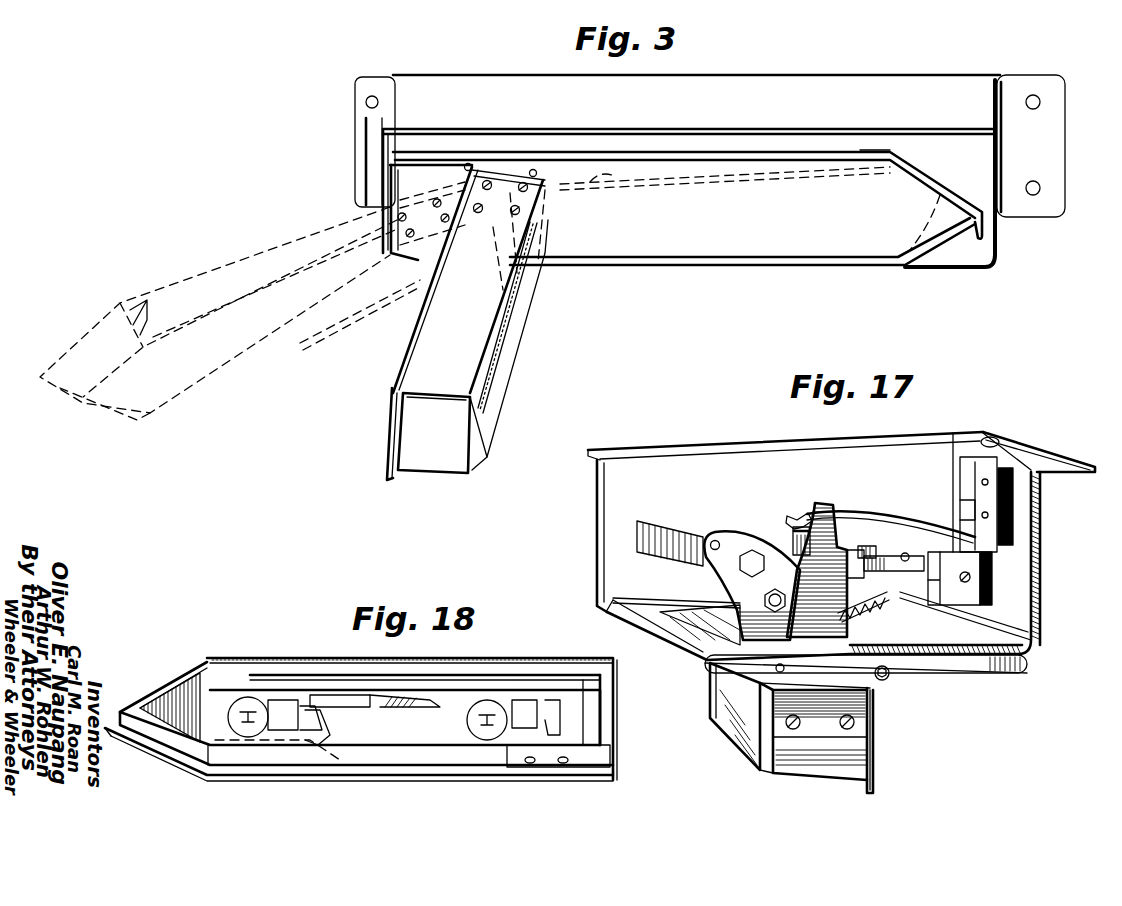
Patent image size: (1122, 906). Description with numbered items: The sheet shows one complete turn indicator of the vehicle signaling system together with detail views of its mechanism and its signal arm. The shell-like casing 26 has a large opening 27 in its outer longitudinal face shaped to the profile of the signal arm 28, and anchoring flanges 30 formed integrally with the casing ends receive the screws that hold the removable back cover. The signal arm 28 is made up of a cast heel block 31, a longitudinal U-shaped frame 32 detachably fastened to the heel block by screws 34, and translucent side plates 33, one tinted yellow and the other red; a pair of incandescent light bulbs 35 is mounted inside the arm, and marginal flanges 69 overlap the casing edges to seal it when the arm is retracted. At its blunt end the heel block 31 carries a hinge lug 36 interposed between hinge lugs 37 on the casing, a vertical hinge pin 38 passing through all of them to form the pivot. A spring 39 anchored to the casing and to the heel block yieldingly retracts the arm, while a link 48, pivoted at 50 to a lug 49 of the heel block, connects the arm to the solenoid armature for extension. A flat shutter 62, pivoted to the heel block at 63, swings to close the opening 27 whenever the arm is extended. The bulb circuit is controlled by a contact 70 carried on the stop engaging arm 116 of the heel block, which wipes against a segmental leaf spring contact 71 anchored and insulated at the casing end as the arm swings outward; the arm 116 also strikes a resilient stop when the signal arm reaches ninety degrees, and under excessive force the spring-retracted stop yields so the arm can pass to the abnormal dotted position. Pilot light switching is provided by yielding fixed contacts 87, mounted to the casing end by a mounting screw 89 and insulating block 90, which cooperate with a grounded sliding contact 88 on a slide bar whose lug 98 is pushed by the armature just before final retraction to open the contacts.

In FIG. 3, the casing 26 is at (848, 63).
In FIG. 17, the casing 26 is at (597, 527).
In FIG. 3, the opening 27 is at (913, 247).
In FIG. 17, the opening 27 is at (632, 643).
In FIG. 3, the signal arm 28 is at (234, 378).
In FIG. 17, the signal arm 28 is at (812, 730).
In FIG. 18, the signal arm 28 is at (361, 710).
In FIG. 3, the anchoring flange 30 is at (370, 87).
In FIG. 17, the anchoring flange 30 is at (1075, 472).
In FIG. 3, the heel block 31 is at (482, 210).
In FIG. 17, the heel block 31 is at (868, 698).
In FIG. 18, the heel block 31 is at (607, 733).
In FIG. 3, the U-shaped frame 32 is at (470, 308).
In FIG. 17, the U-shaped frame 32 is at (827, 763).
In FIG. 18, the U-shaped frame 32 is at (303, 660).
In FIG. 3, the side plate 33 is at (507, 340).
In FIG. 17, the side plate 33 is at (743, 718).
In FIG. 18, the side plate 33 is at (197, 690).
In FIG. 3, the screw 34 is at (515, 183).
In FIG. 17, the screw 34 is at (857, 722).
In FIG. 18, the light bulb 35 is at (248, 733).
In FIG. 17, the hinge lug 36 is at (867, 657).
In FIG. 3, the hinge lug 37 is at (420, 180).
In FIG. 17, the hinge lug 37 is at (910, 665).
In FIG. 3, the hinge pin 38 is at (468, 164).
In FIG. 17, the hinge pin 38 is at (893, 673).
In FIG. 17, the spring 39 is at (889, 602).
In FIG. 17, the link 48 is at (673, 520).
In FIG. 17, the lug 49 is at (733, 538).
In FIG. 17, the pivotal connection 50 is at (727, 545).
In FIG. 3, the shutter 62 is at (687, 237).
In FIG. 17, the shutter 62 is at (687, 648).
In FIG. 3, the pivotal connection 63 is at (535, 172).
In FIG. 17, the pivotal connection 63 is at (778, 669).
In FIG. 3, the marginal flange 69 is at (392, 452).
In FIG. 17, the marginal flange 69 is at (870, 740).
In FIG. 18, the marginal flange 69 is at (140, 743).
In FIG. 17, the contact 70 is at (791, 520).
In FIG. 17, the leaf spring contact 71 is at (877, 513).
In FIG. 17, the fixed contact 87 is at (907, 572).
In FIG. 17, the sliding contact 88 is at (907, 546).
In FIG. 17, the mounting screw 89 is at (970, 605).
In FIG. 17, the insulating block 90 is at (985, 562).
In FIG. 17, the lug 98 is at (870, 546).
In FIG. 17, the stop engaging arm 116 is at (840, 540).